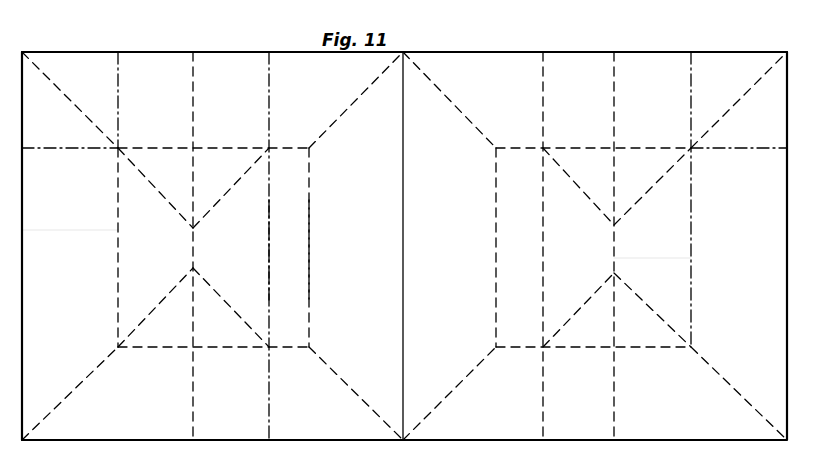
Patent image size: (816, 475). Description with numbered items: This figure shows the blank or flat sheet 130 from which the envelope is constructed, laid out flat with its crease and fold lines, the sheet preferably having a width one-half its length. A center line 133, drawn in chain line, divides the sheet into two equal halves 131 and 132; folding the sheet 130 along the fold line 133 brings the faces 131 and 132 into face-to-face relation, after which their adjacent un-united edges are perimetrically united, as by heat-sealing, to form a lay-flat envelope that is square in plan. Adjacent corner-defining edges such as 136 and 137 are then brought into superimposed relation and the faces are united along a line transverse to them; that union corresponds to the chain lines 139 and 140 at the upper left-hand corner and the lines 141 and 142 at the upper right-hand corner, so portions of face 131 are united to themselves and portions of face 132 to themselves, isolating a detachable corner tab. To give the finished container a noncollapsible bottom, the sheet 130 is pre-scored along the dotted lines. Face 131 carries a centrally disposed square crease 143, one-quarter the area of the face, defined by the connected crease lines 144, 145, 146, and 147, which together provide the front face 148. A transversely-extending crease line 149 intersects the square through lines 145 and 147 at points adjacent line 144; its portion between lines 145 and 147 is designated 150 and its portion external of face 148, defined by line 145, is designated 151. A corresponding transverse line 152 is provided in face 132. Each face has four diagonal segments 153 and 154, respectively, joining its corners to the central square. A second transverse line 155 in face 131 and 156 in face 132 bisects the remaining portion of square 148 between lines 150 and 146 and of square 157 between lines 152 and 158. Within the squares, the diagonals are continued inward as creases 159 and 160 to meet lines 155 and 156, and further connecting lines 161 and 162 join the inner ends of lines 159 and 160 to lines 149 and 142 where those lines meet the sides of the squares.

The blank or flat sheet 130 is at (582, 60).
The half or face 131 is at (158, 60).
The half or face 132 is at (655, 63).
The center line or fold line 133 is at (402, 276).
The corner-defining edge 136 is at (68, 52).
The corner-defining edge 137 is at (14, 98).
The line or tab 139 is at (120, 100).
The line 140 is at (60, 150).
The line 141 is at (690, 103).
The line 142 is at (733, 150).
The square crease 143 is at (315, 241).
The crease line 144 is at (310, 205).
The crease line 145 is at (237, 147).
The crease line 146 is at (118, 222).
The crease line 147 is at (205, 350).
The face or square 148 is at (130, 254).
The transversely-extending crease line 149 is at (275, 105).
The portion of line 149 150 is at (269, 245).
The portion of line 149 151 is at (271, 78).
The transverse line 152 is at (535, 103).
The diagonal segments 153 is at (62, 92).
The diagonal segments 154 is at (460, 114).
The second transverse line 155 is at (201, 100).
The second transverse line 156 is at (622, 400).
The square 157 is at (672, 257).
The line 158 is at (692, 228).
The diagonal crease lines 159 is at (155, 186).
The diagonal crease lines 160 is at (640, 200).
The connecting lines 161 is at (222, 198).
The connecting lines 162 is at (588, 200).